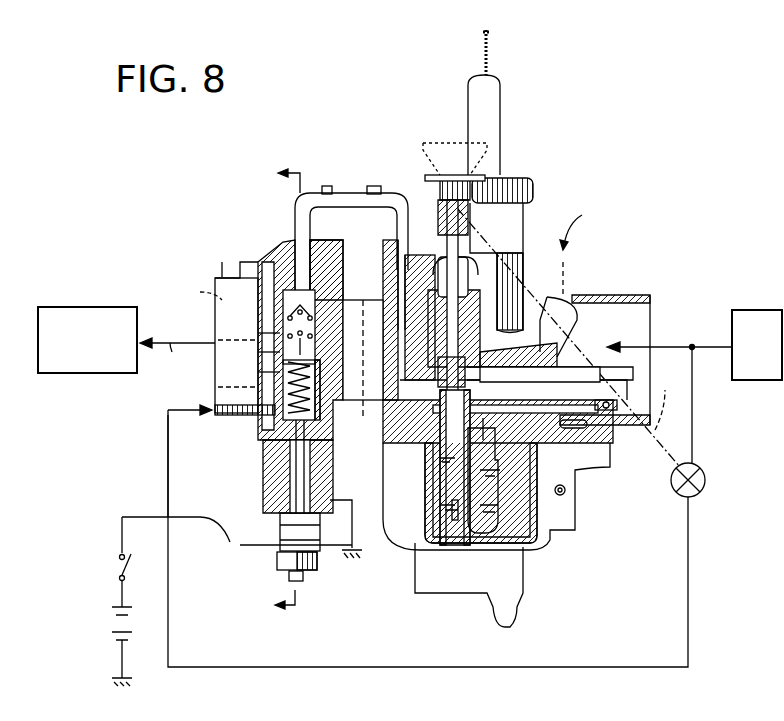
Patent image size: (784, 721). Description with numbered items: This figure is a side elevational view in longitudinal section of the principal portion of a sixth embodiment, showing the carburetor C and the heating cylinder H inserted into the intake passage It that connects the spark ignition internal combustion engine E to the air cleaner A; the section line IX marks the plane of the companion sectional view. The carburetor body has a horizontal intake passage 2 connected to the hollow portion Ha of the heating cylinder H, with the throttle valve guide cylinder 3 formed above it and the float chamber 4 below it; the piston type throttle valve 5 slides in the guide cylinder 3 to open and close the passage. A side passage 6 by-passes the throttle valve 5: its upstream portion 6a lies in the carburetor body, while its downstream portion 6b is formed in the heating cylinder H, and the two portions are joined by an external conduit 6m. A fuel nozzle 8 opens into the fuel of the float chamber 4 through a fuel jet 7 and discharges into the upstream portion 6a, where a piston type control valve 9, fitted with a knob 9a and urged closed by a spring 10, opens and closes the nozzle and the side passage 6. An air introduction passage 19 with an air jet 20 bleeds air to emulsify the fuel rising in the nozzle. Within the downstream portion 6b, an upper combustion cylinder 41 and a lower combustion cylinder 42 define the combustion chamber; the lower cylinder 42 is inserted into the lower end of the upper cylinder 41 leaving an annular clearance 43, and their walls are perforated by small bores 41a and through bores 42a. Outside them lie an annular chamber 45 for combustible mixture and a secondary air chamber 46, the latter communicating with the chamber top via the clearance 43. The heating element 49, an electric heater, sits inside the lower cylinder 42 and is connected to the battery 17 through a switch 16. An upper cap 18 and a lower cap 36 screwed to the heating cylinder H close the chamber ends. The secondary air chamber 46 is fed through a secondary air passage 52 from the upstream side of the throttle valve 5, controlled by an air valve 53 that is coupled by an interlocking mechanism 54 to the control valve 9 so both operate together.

The intake passage 2 is at (595, 360).
The throttle valve guide cylinder 3 is at (510, 228).
The float chamber 4 is at (540, 505).
The throttle valve 5 is at (520, 283).
The side passage 6 is at (520, 340).
The upstream portion of the side passage 6a is at (555, 378).
The downstream portion of the side passage 6b is at (278, 258).
The conduit 6m is at (352, 192).
The fuel jet 7 is at (440, 498).
The fuel nozzle 8 is at (478, 390).
The control valve 9 is at (462, 355).
The knob 9a is at (428, 170).
The spring 10 is at (465, 317).
The switch 16 is at (118, 560).
The battery 17 is at (114, 620).
The upper cap 18 is at (328, 265).
The air introduction passage 19 is at (515, 418).
The air jet 20 is at (612, 415).
The lower cap 36 is at (265, 505).
The upper combustion cylinder 41 is at (266, 310).
The small bores 41a is at (300, 305).
The lower combustion cylinder 42 is at (265, 435).
The through bores 42a is at (320, 412).
The annular clearance 43 is at (254, 353).
The annular chamber for combustible gaseous mixture 45 is at (254, 331).
The secondary air chamber 46 is at (254, 375).
The heating element 49 is at (370, 330).
The secondary air passage 52 is at (688, 558).
The air valve 53 is at (706, 480).
The interlocking mechanism 54 is at (646, 432).
The air cleaner A is at (757, 345).
The carburetor C is at (568, 335).
The internal combustion engine E is at (87, 340).
The heating cylinder H is at (236, 326).
The hollow portion Ha is at (200, 286).
The intake passage It is at (177, 362).
The section line IX is at (270, 395).